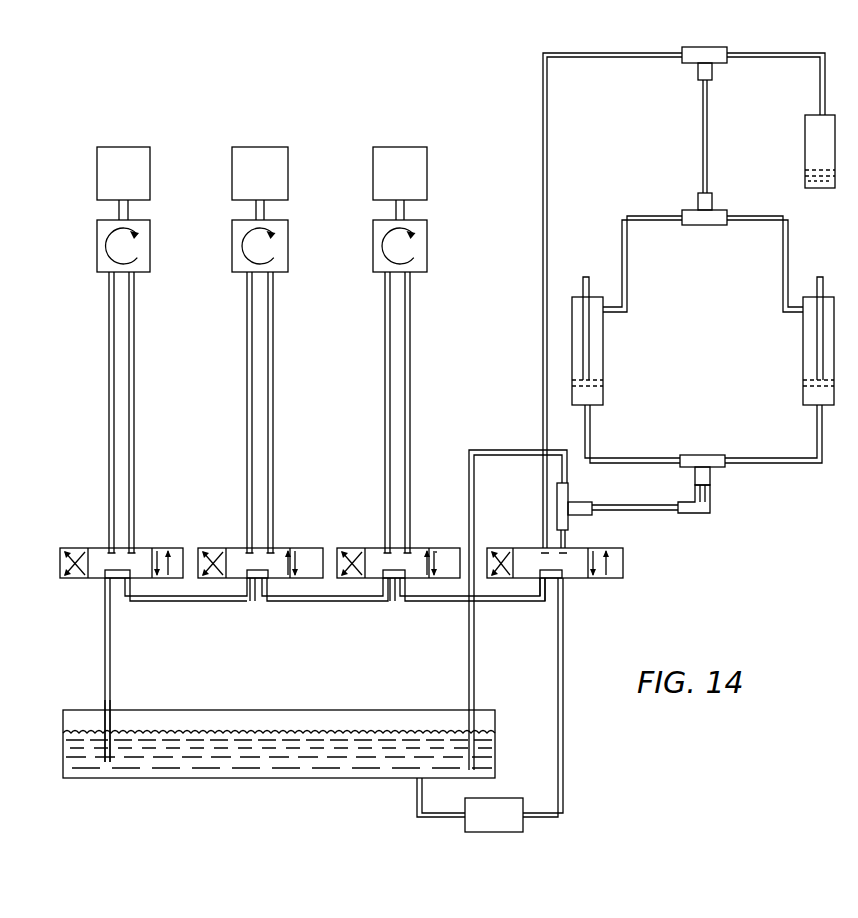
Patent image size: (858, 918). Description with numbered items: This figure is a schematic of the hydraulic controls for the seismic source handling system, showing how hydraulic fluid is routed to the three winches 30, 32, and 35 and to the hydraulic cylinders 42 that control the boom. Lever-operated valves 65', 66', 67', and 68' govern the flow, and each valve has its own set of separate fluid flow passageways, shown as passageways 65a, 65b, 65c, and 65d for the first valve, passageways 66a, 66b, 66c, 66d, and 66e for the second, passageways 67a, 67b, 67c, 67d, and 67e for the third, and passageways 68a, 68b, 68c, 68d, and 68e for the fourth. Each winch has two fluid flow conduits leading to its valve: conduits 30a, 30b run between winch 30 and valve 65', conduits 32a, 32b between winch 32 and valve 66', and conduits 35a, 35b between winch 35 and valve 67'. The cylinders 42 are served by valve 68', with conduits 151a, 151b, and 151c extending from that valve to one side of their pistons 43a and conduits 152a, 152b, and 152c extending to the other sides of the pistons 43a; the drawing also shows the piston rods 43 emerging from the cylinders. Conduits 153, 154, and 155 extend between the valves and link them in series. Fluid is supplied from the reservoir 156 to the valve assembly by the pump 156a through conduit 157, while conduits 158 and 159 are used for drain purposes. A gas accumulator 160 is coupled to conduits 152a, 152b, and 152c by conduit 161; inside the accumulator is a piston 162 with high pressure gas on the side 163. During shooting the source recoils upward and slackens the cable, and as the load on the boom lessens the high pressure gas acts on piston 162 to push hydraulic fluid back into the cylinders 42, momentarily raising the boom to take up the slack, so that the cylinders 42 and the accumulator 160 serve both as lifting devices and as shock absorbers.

The winch 30 is at (125, 149).
The winch 32 is at (260, 149).
The winch 35 is at (401, 149).
The fluid flow conduit 30a is at (108, 307).
The fluid flow conduit 30b is at (135, 307).
The fluid flow conduit 32a is at (246, 385).
The fluid flow conduit 32b is at (274, 385).
The fluid flow conduit 35a is at (384, 307).
The fluid flow conduit 35b is at (411, 307).
The valve 65' is at (115, 576).
The fluid flow passageway 65a is at (76, 540).
The fluid flow passageway 65b is at (82, 548).
The fluid flow passageway 65c is at (112, 590).
The fluid flow passageway 65d is at (161, 541).
The valve 66' is at (260, 591).
The fluid flow passageway 66a is at (213, 540).
The fluid flow passageway 66b is at (222, 548).
The fluid flow passageway 66c is at (255, 590).
The fluid flow passageway 66d is at (300, 541).
The fluid flow passageway 66e is at (168, 551).
The valve 67' is at (398, 591).
The fluid flow passageway 67a is at (352, 540).
The fluid flow passageway 67b is at (358, 548).
The fluid flow passageway 67c is at (394, 590).
The fluid flow passageway 67d is at (437, 541).
The fluid flow passageway 67e is at (436, 551).
The valve 68' is at (573, 562).
The fluid flow passageway 68a is at (505, 540).
The fluid flow passageway 68b is at (508, 560).
The fluid flow passageway 68c is at (548, 580).
The fluid flow passageway 68d is at (590, 567).
The fluid flow passageway 68e is at (606, 567).
The hydraulic cylinder 42 is at (604, 345).
The piston rod 43 is at (583, 283).
The piston 43a is at (590, 386).
The conduit 151a is at (566, 538).
The conduit 151b is at (636, 512).
The conduit 151c is at (628, 458).
The conduit 152a is at (542, 182).
The conduit 152b is at (708, 137).
The conduit 152c is at (679, 215).
The conduit 153 is at (181, 601).
The conduit 154 is at (322, 601).
The conduit 155 is at (485, 601).
The reservoir 156 is at (215, 779).
The pump 156a is at (495, 833).
The conduit 157 is at (565, 783).
The conduit 158 is at (475, 672).
The conduit 159 is at (111, 672).
The gas accumulator 160 is at (805, 127).
The conduit 161 is at (826, 83).
The piston 162 is at (805, 172).
The high pressure gas side 163 is at (815, 180).